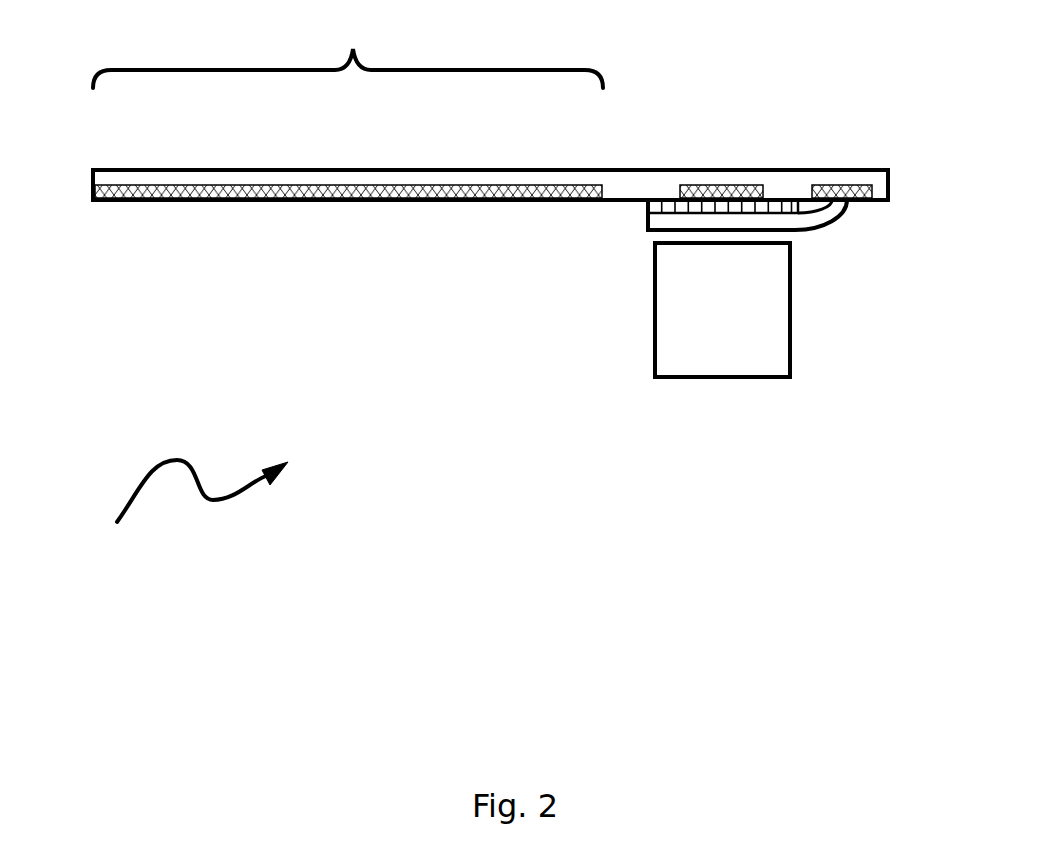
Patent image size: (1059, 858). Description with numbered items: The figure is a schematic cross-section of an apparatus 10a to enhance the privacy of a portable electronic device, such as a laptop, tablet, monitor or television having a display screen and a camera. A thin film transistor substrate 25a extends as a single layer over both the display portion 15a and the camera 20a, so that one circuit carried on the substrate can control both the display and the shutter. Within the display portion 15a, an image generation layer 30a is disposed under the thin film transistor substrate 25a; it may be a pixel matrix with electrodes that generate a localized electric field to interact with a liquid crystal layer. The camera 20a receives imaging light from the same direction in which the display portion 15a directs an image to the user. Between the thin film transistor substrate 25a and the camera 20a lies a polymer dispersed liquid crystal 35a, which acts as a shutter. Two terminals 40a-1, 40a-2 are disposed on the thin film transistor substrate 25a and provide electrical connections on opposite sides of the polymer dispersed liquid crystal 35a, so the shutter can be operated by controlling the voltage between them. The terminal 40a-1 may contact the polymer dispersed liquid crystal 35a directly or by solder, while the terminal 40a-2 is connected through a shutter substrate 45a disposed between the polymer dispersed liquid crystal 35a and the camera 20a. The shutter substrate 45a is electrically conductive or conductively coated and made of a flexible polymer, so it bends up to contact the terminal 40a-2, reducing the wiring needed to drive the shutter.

The apparatus 10a is at (185, 510).
The display portion 15a is at (348, 54).
The camera 20a is at (722, 310).
The thin film transistor substrate 25a is at (780, 177).
The image generation layer 30a is at (102, 193).
The polymer dispersed liquid crystal 35a is at (652, 208).
The terminal 40a-1 is at (713, 193).
The terminal 40a-2 is at (842, 193).
The shutter substrate 45a is at (817, 222).